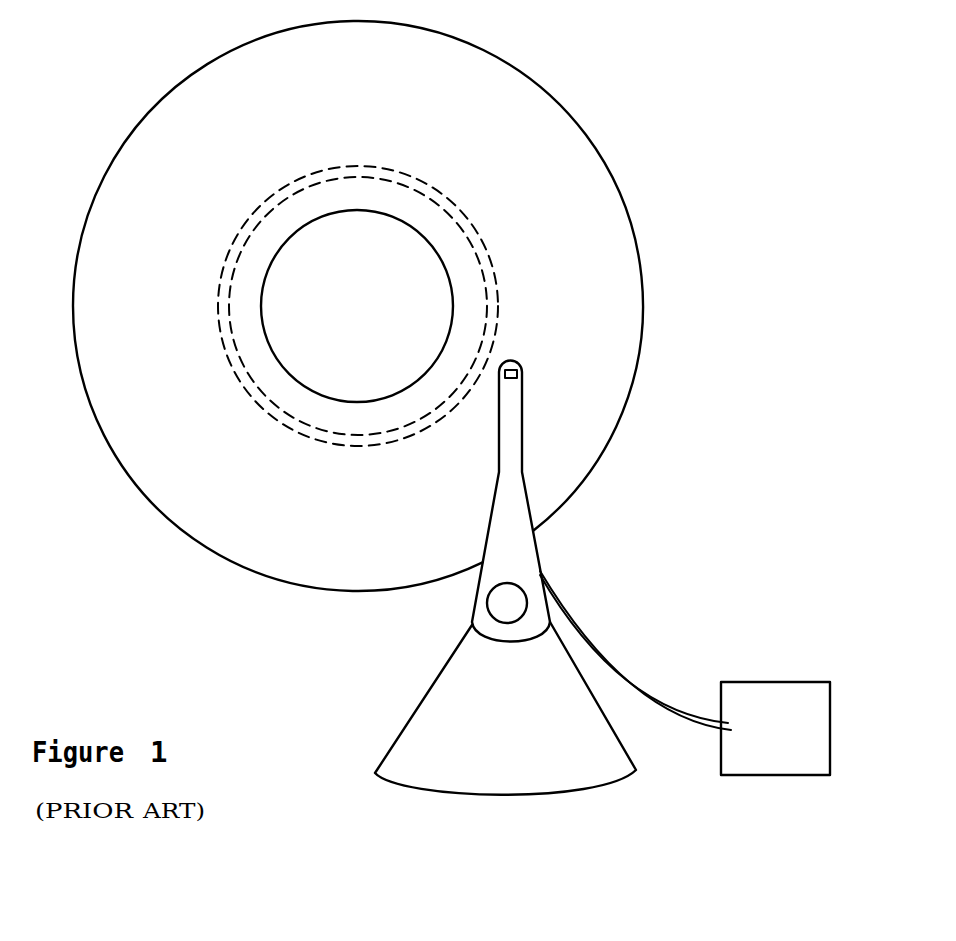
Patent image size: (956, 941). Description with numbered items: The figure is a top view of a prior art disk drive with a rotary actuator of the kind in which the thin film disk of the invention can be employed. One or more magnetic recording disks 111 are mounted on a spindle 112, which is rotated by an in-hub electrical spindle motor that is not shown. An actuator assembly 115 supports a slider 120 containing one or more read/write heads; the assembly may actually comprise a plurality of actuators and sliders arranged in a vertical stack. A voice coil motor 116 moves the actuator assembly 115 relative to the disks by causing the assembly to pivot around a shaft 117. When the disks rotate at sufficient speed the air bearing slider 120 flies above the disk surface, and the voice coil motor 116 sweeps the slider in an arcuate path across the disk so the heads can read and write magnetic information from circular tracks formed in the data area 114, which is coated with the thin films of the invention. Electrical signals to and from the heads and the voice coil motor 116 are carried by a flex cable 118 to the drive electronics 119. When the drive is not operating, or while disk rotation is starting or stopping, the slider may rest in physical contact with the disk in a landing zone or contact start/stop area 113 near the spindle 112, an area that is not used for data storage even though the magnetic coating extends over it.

The magnetic recording disk 111 is at (108, 157).
The spindle 112 is at (332, 284).
The contact start/stop (CSS) area 113 is at (462, 218).
The data area 114 is at (587, 262).
The actuator assembly 115 is at (512, 510).
The voice coil motor (VCM) 116 is at (440, 703).
The shaft 117 is at (504, 603).
The flex cable 118 is at (631, 655).
The drive electronics 119 is at (787, 675).
The slider 120 is at (517, 373).